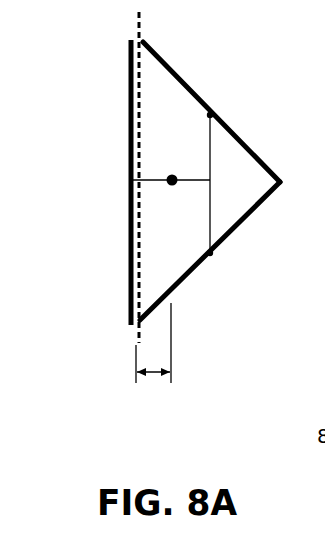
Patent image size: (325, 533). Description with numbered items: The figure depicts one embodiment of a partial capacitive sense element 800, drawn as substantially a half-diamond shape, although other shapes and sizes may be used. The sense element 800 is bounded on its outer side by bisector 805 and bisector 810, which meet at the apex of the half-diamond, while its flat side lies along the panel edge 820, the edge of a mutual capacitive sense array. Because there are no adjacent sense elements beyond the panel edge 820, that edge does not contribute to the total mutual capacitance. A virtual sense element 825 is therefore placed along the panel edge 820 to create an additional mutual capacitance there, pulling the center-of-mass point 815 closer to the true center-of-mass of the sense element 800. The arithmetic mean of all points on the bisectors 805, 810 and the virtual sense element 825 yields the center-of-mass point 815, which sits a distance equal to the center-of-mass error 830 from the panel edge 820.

The partial capacitive sense element 800 is at (171, 204).
The bisector 805 is at (212, 112).
The bisector 810 is at (212, 255).
The center-of-mass point 815 is at (170, 178).
The panel edge 820 is at (136, 338).
The virtual sense element 825 is at (130, 243).
The center-of-mass error 830 is at (152, 378).